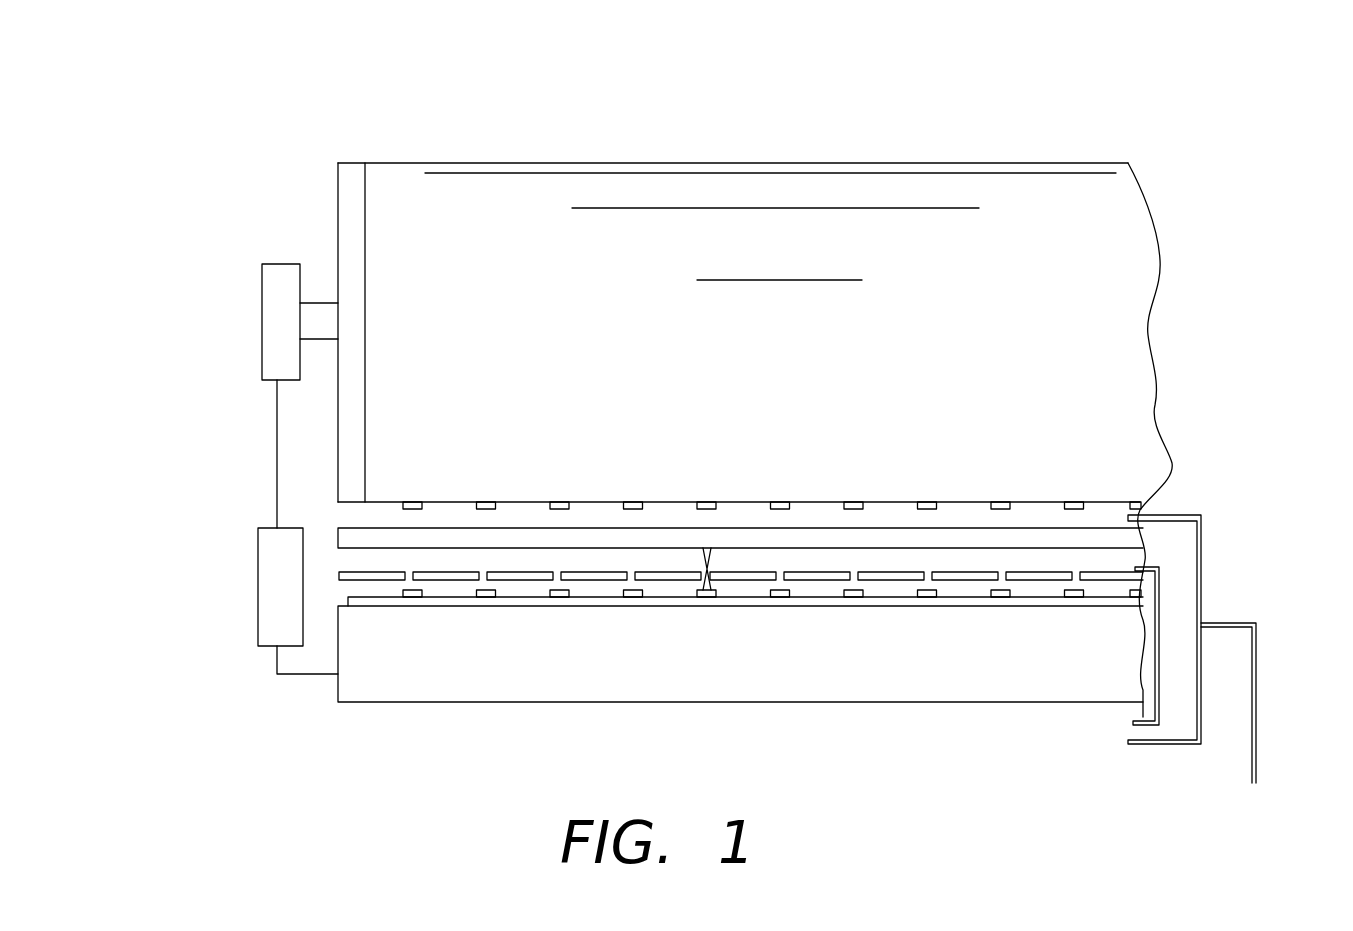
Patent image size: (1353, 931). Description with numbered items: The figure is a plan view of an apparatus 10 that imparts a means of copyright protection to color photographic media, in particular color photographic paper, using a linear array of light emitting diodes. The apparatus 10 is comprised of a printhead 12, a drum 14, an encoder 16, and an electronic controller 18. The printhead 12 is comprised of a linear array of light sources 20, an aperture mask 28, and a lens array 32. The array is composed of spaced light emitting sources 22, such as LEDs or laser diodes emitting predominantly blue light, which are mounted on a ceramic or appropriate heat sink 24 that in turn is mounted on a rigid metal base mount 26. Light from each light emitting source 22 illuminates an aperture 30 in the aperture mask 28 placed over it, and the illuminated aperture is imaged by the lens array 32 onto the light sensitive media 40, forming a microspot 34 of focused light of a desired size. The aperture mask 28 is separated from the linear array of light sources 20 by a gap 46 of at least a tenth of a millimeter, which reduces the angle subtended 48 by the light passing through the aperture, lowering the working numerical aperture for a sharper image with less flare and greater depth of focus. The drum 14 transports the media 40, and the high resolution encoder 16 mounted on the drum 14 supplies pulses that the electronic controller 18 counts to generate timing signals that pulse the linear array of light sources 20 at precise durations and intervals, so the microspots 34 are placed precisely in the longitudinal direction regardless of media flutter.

The apparatus 10 is at (222, 178).
The printhead 12 is at (1258, 648).
The drum 14 is at (348, 163).
The encoder 16 is at (268, 325).
The electronic controller 18 is at (266, 562).
The linear array of light sources 20 is at (1160, 590).
The light emitting sources 22 is at (998, 600).
The heat sink 24 is at (699, 607).
The rigid metal base mount 26 is at (511, 699).
The aperture mask 28 is at (1113, 573).
The aperture 30 is at (636, 582).
The lens array 32 is at (1050, 530).
The microspot 34 is at (780, 503).
The light sensitive media 40 is at (548, 165).
The gap 46 is at (362, 589).
The angle subtended 48 is at (710, 550).